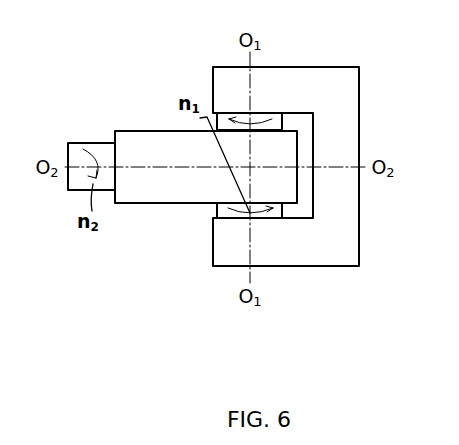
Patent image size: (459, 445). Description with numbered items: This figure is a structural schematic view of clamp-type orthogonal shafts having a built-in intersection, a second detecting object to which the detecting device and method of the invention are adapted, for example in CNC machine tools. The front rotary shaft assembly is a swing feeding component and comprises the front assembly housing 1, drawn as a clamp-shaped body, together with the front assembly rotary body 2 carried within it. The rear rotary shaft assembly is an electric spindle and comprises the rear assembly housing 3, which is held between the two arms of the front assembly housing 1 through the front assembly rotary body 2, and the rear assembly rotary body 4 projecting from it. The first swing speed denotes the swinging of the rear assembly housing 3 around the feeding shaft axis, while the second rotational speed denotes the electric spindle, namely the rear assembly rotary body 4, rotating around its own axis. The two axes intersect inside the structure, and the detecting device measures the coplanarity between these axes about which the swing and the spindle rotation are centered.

The front assembly housing 1 is at (312, 92).
The front assembly rotary body 2 is at (273, 122).
The rear assembly housing 3 is at (178, 145).
The rear assembly rotary body 4 is at (105, 153).